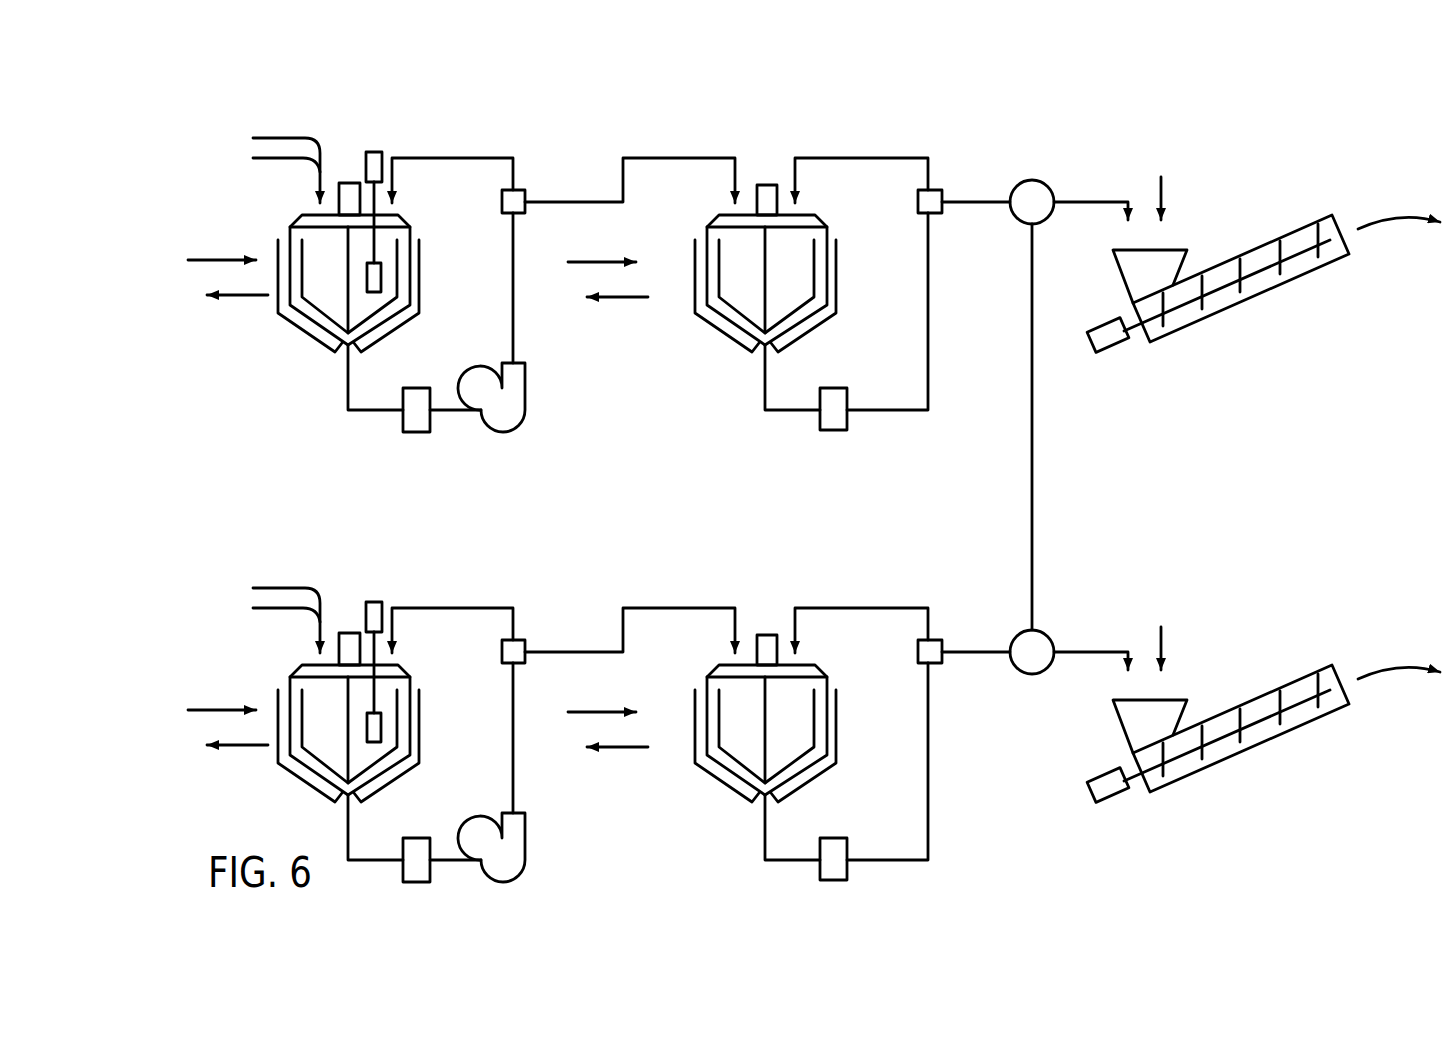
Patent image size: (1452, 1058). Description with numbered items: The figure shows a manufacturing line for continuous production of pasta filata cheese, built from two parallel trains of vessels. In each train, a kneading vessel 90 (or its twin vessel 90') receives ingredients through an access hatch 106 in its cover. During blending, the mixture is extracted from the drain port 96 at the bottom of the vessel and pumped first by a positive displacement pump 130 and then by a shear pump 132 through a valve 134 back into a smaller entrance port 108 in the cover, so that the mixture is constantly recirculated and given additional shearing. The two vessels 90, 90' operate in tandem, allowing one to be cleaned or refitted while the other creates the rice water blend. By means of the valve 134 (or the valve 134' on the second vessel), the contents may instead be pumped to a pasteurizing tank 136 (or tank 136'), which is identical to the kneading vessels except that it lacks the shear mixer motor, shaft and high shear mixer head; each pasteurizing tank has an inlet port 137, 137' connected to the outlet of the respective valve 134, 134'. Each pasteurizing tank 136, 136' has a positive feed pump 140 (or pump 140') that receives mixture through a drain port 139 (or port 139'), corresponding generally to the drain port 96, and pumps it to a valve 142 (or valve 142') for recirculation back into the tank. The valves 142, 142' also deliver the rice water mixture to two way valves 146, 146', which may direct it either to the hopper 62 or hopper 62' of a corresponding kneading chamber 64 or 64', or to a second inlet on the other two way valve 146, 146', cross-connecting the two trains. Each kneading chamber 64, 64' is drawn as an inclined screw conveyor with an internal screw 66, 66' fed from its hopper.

The kneading vessel 90 is at (391, 227).
The access hatch 106 is at (317, 212).
The entrance port 108 is at (407, 160).
The valve 134 is at (541, 240).
The drain port 96 is at (348, 377).
The positive displacement pump 130 is at (415, 431).
The shear pump 132 is at (500, 431).
The inlet port 137 is at (638, 142).
The pasteurizing tank 136 is at (811, 222).
The drain port 139 is at (743, 384).
The positive feed pump 140 is at (845, 351).
The valve 142 is at (964, 165).
The two way valve 146 is at (1069, 167).
The hopper 62 is at (1170, 236).
The kneading chamber 64 is at (1263, 244).
The screw 66 is at (1243, 277).
The kneading vessel 90' is at (395, 677).
The valve 134' is at (543, 615).
The inlet port 137' is at (641, 592).
The pasteurizing tank 136' is at (811, 672).
The drain port 139' is at (742, 834).
The positive feed pump 140' is at (844, 801).
The valve 142' is at (964, 615).
The two way valve 146' is at (1069, 627).
The hopper 62' is at (1172, 686).
The kneading chamber 64' is at (1263, 694).
The screw (second train) 66' is at (1245, 727).